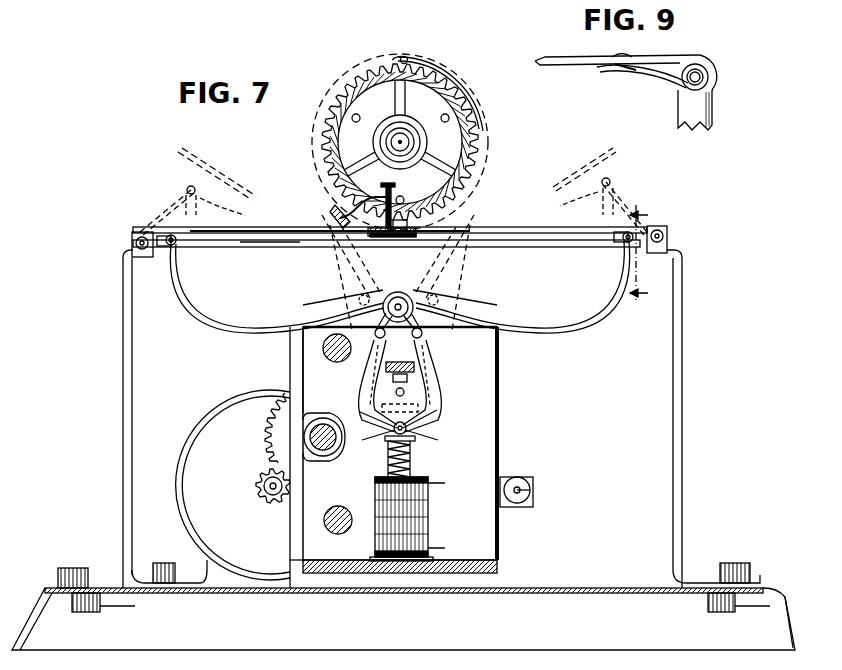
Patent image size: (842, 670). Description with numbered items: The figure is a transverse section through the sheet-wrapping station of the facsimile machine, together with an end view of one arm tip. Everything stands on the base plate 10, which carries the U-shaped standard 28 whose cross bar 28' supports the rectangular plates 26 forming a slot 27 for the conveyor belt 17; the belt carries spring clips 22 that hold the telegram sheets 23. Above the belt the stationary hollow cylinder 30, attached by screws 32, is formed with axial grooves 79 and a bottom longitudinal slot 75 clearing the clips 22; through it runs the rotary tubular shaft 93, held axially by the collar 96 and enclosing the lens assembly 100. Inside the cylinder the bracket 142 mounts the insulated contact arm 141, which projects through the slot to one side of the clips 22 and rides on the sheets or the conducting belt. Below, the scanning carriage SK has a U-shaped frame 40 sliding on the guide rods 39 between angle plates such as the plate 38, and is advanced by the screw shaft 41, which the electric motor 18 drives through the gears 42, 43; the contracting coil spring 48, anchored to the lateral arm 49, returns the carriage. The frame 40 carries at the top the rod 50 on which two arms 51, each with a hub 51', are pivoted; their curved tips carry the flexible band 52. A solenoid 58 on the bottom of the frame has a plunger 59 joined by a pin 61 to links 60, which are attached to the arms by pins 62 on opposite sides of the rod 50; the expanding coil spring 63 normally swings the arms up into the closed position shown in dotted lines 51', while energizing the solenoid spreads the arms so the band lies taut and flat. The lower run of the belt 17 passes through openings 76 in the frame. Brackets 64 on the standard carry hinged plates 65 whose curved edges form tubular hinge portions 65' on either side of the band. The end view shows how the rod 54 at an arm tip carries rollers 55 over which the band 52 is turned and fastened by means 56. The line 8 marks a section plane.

In FIG. 7, the base plate 10 is at (552, 630).
In FIG. 7, the U-shaped standard 28 is at (409, 419).
In FIG. 7, the cross bar 28' is at (253, 258).
In FIG. 7, the flexible band 52 is at (300, 228).
In FIG. 9, the flexible band 52 is at (560, 56).
In FIG. 7, the rectangular plates 26 is at (300, 245).
In FIG. 7, the horizontal brackets 64 is at (132, 237).
In FIG. 7, the hinged plates 65 is at (391, 216).
In FIG. 7, the tubular hinge portion 65' is at (393, 192).
In FIG. 7, the arms 51 is at (399, 200).
In FIG. 9, the arms 51 is at (712, 110).
In FIG. 7, the hub 51' is at (413, 192).
In FIG. 7, the telegram sheets 23 is at (222, 170).
In FIG. 7, the section line 8 is at (647, 254).
In FIG. 7, the stationary hollow cylinder 30 is at (325, 136).
In FIG. 7, the axial grooves 79 is at (335, 108).
In FIG. 7, the collar 96 is at (410, 122).
In FIG. 7, the lens assembly 100 is at (382, 136).
In FIG. 7, the rotary tubular shaft 93 is at (414, 136).
In FIG. 7, the screws 32 is at (359, 116).
In FIG. 7, the rod 54 is at (406, 57).
In FIG. 9, the rod 54 is at (688, 83).
In FIG. 7, the bracket 142 is at (366, 182).
In FIG. 7, the contact arm 141 is at (332, 214).
In FIG. 7, the spring clips 22 is at (398, 205).
In FIG. 7, the longitudinal slot 75 is at (404, 210).
In FIG. 7, the slot 27 is at (365, 247).
In FIG. 7, the conveyor belt 17 is at (390, 248).
In FIG. 7, the rod 50 is at (402, 305).
In FIG. 7, the pins 62 is at (375, 326).
In FIG. 7, the scanning carriage SK is at (512, 382).
In FIG. 7, the U-shaped frame 40 is at (498, 425).
In FIG. 7, the guide rods 39 is at (323, 352).
In FIG. 7, the screw shaft 41 is at (326, 445).
In FIG. 7, the gear 43 is at (272, 430).
In FIG. 7, the gear 42 is at (262, 488).
In FIG. 7, the electric motor 18 is at (200, 432).
In FIG. 7, the angle plate 38 is at (296, 538).
In FIG. 7, the links 60 is at (360, 415).
In FIG. 7, the plunger 59 is at (373, 441).
In FIG. 7, the pin 61 is at (431, 441).
In FIG. 7, the openings 76 is at (385, 365).
In FIG. 7, the expanding coil spring 63 is at (412, 462).
In FIG. 7, the solenoid 58 is at (428, 522).
In FIG. 7, the contracting coil spring 48 is at (515, 477).
In FIG. 7, the lateral arm 49 is at (533, 502).
In FIG. 9, the fastening means 56 is at (620, 55).
In FIG. 9, the rollers 55 is at (708, 74).